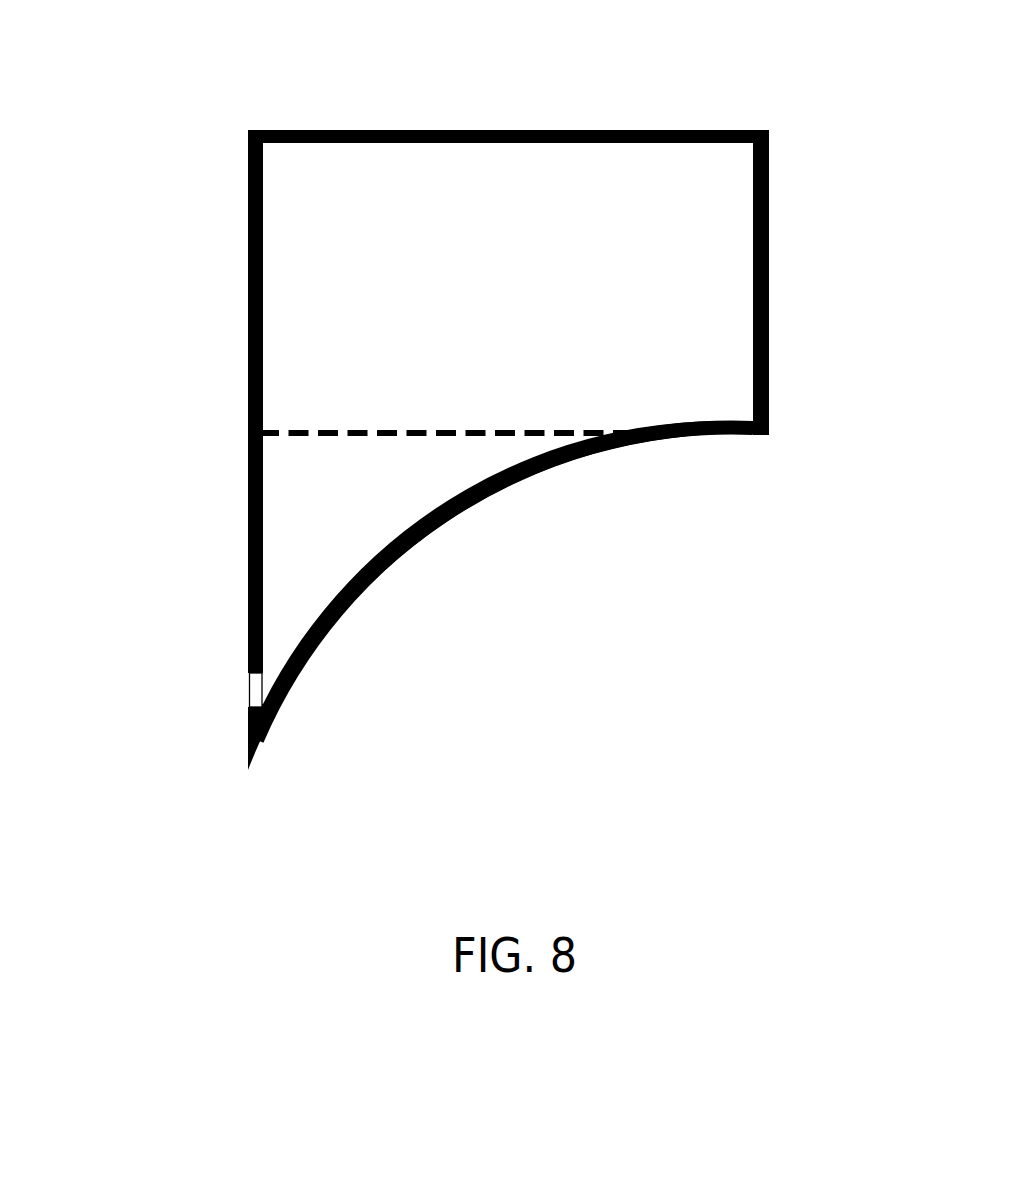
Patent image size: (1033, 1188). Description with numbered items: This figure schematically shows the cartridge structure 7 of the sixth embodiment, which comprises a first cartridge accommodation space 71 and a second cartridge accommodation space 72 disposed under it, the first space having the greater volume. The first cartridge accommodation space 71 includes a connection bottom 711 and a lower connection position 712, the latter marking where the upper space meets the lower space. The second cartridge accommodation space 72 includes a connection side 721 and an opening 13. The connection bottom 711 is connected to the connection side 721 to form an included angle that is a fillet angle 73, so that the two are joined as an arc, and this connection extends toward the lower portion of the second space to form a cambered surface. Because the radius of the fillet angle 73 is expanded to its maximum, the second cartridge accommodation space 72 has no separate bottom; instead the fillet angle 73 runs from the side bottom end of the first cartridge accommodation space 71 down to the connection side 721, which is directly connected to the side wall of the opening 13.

The cartridge structure 7 is at (533, 92).
The first cartridge accommodation space 71 is at (718, 282).
The connection bottom 711 is at (723, 437).
The lower connection position 712 is at (417, 390).
The second cartridge accommodation space 72 is at (285, 513).
The connection side 721 is at (295, 682).
The fillet angle 73 is at (500, 535).
The opening 13 is at (255, 683).